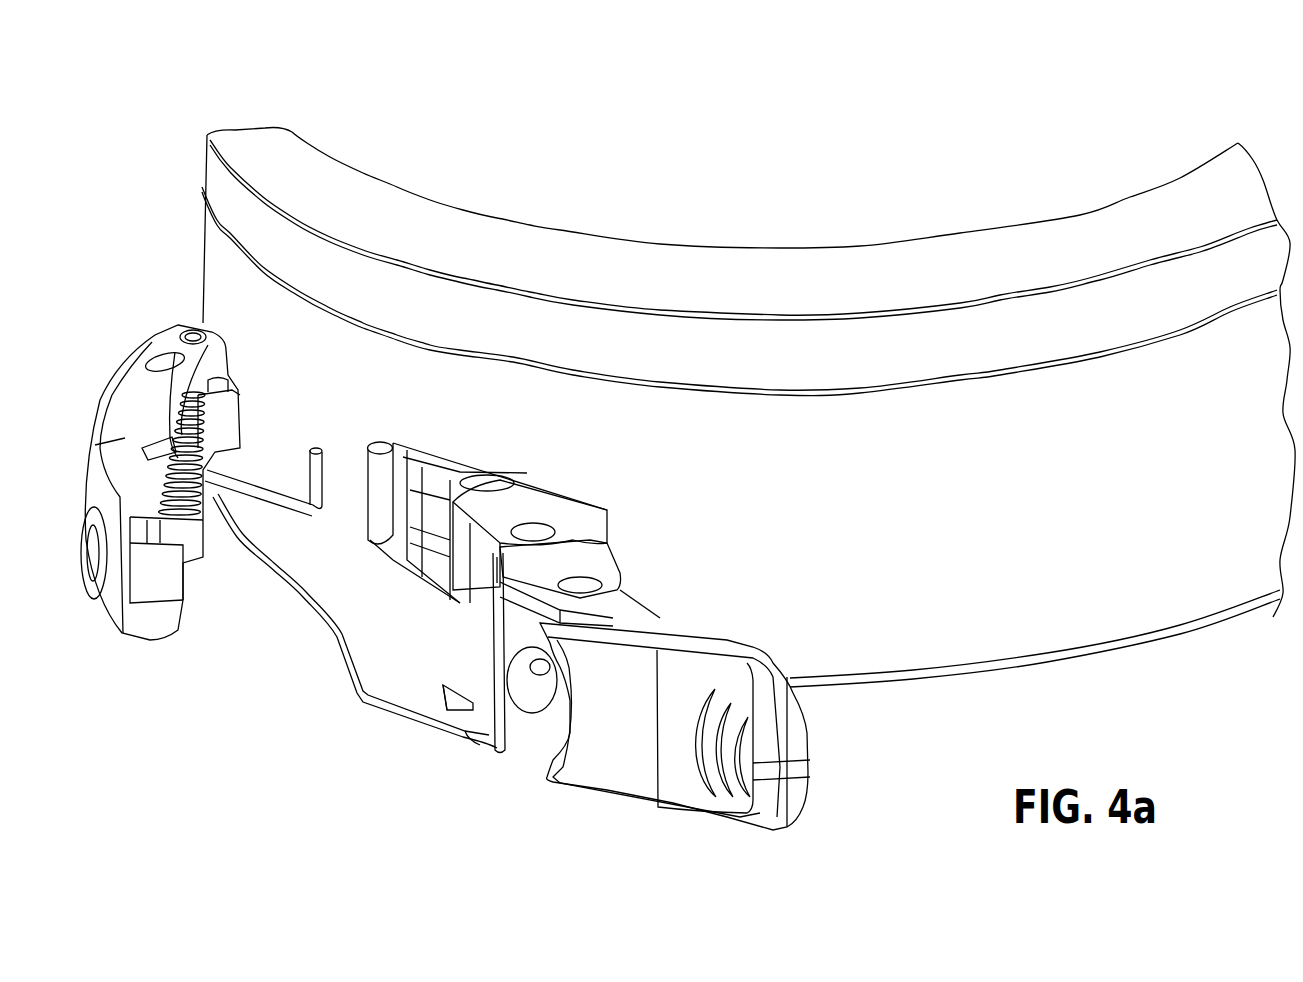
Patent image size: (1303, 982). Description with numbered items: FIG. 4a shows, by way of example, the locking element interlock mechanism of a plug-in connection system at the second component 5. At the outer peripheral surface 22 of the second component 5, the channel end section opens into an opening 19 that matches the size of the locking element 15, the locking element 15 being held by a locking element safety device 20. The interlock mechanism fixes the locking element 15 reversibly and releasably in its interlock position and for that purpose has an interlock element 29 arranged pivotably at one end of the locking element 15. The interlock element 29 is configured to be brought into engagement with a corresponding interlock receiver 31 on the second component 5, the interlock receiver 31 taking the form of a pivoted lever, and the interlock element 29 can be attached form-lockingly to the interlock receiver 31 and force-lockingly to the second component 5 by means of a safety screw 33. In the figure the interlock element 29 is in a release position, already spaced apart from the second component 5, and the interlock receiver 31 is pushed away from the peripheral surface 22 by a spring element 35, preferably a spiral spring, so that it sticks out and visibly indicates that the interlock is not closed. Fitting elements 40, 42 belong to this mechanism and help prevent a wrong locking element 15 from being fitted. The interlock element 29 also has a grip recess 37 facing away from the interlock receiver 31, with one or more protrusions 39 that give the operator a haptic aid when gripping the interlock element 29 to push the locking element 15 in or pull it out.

The second component 5 is at (150, 184).
The outer peripheral surface 22 is at (227, 287).
The interlock receiver 31 is at (135, 405).
The safety screw 33 is at (90, 583).
The fitting element 40 is at (152, 570).
The spring element 35 is at (287, 507).
The opening 19 is at (370, 563).
The locking element safety device 20 is at (427, 752).
The locking element 15 is at (590, 560).
The fitting element 42 is at (545, 662).
The interlock element 29 is at (573, 777).
The grip recess 37 is at (665, 772).
The protrusion 39 is at (700, 765).